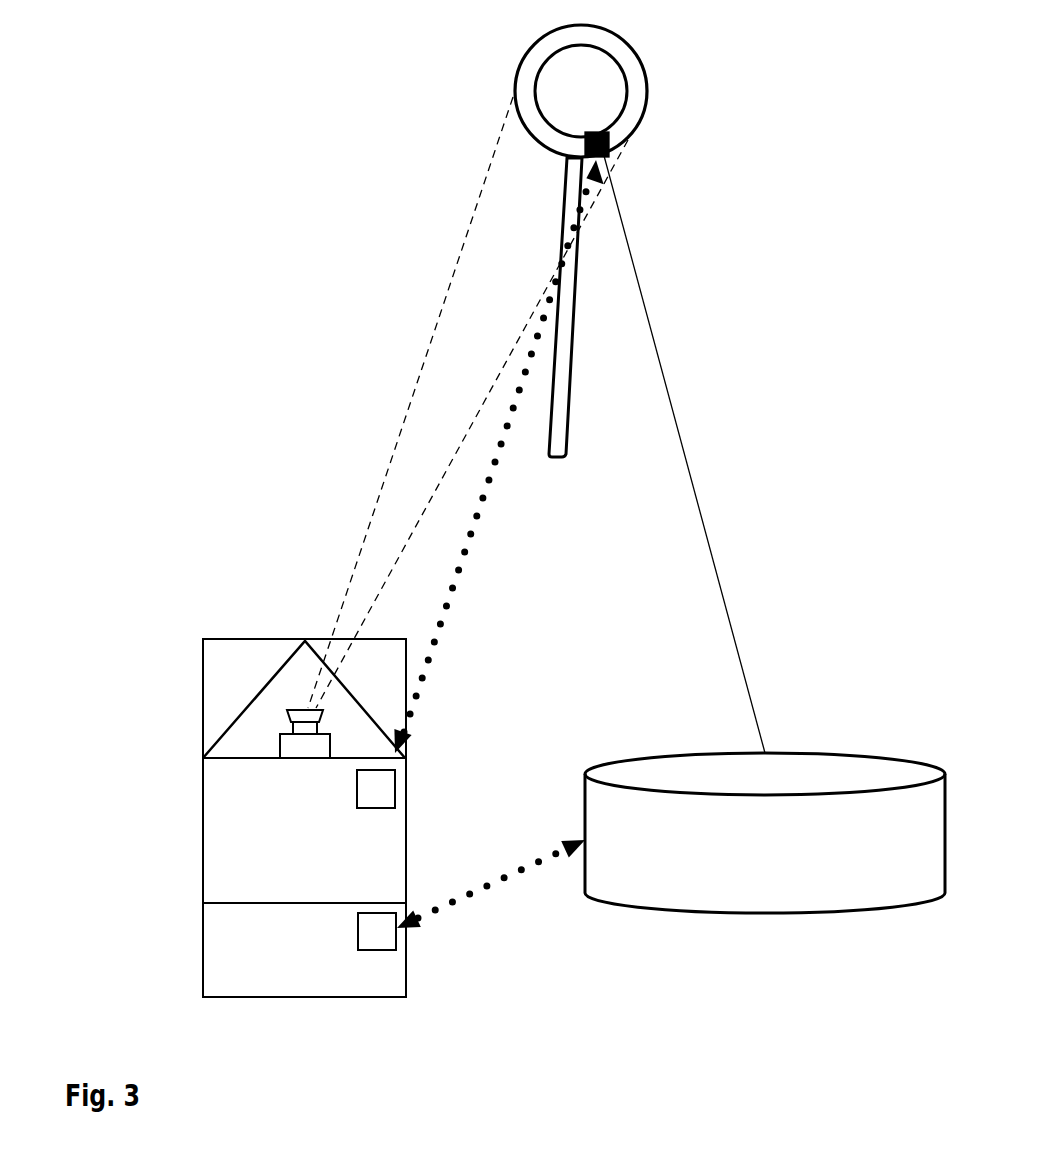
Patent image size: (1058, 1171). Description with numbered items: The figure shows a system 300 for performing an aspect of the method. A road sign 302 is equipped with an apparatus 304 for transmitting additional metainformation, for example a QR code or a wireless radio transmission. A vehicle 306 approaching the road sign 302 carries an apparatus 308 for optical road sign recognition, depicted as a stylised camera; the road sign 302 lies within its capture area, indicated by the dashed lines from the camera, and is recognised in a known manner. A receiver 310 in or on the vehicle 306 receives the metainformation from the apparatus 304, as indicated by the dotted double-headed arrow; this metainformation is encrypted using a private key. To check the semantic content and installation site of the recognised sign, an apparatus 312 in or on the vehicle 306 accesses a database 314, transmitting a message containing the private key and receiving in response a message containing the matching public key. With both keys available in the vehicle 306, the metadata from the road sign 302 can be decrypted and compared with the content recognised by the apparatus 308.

The system 300 is at (245, 178).
The road sign 302 is at (536, 35).
The apparatus for transmitting additional metainformation 304 is at (612, 142).
The vehicle 306 is at (200, 856).
The apparatus for optical road sign recognition 308 is at (302, 748).
The receiver 310 is at (358, 809).
The apparatus 312 is at (385, 951).
The database 314 is at (765, 833).